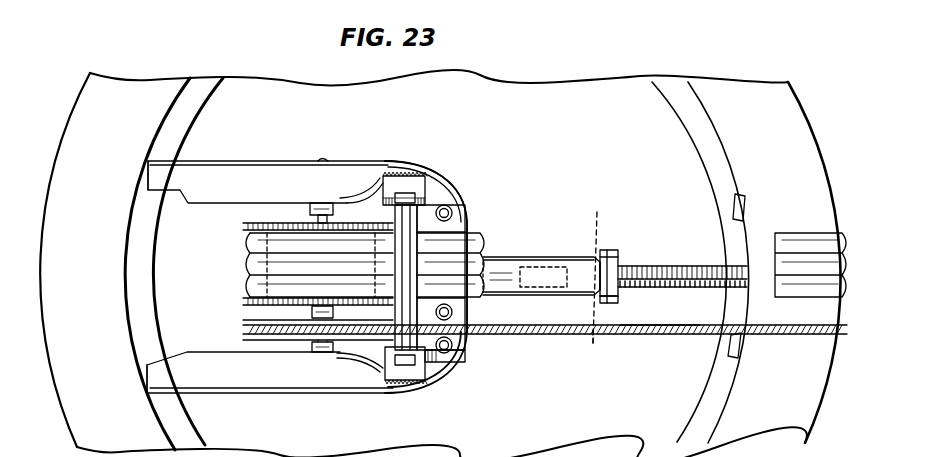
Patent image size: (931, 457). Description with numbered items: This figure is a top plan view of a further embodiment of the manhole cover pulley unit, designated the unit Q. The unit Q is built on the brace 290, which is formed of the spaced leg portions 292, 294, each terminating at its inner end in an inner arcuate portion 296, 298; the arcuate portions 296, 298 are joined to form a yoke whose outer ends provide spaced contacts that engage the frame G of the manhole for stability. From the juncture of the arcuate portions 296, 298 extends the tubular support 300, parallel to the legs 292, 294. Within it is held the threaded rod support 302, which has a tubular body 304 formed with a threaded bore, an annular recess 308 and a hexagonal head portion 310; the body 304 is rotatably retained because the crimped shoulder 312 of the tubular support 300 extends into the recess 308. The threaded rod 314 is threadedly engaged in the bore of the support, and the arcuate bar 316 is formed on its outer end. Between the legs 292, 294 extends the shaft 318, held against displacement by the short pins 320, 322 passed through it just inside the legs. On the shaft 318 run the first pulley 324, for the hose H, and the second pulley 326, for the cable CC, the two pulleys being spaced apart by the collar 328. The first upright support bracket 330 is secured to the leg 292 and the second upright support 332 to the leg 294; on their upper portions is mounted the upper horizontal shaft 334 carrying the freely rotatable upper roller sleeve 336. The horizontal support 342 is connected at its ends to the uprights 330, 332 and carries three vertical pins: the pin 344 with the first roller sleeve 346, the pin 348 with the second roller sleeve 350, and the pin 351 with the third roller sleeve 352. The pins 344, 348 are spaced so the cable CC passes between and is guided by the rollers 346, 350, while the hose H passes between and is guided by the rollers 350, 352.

The brace 290 is at (297, 396).
The leg portion 292 is at (249, 172).
The leg portion 294 is at (248, 387).
The inner arcuate portion 296 is at (446, 184).
The inner arcuate portion 298 is at (442, 376).
The tubular support 300 is at (536, 257).
The threaded rod support 302 is at (612, 251).
The tubular body 304 is at (610, 268).
The annular recess 308 is at (593, 333).
The hexagonal head portion 310 is at (613, 302).
The crimped shoulder 312 is at (600, 250).
The threaded rod 314 is at (678, 267).
The arcuate bar 316 is at (739, 231).
The shaft 318 is at (324, 160).
The short pin 320 is at (310, 207).
The short pin 322 is at (318, 352).
The first pulley 324 is at (243, 229).
The second pulley 326 is at (243, 327).
The collar 328 is at (308, 312).
The first upright support bracket 330 is at (405, 176).
The second upright support 332 is at (427, 386).
The upper horizontal shaft 334 is at (402, 388).
The upper roller sleeve 336 is at (380, 377).
The horizontal support 342 is at (465, 200).
The vertical pin 344 is at (453, 363).
The first roller sleeve 346 is at (465, 346).
The vertical pin 348 is at (453, 309).
The second roller sleeve 350 is at (516, 301).
The vertical pin 351 is at (438, 178).
The third roller sleeve 352 is at (452, 187).
The frame G is at (117, 330).
The hose H is at (806, 233).
The unit Q is at (438, 155).
The cable CC is at (633, 335).